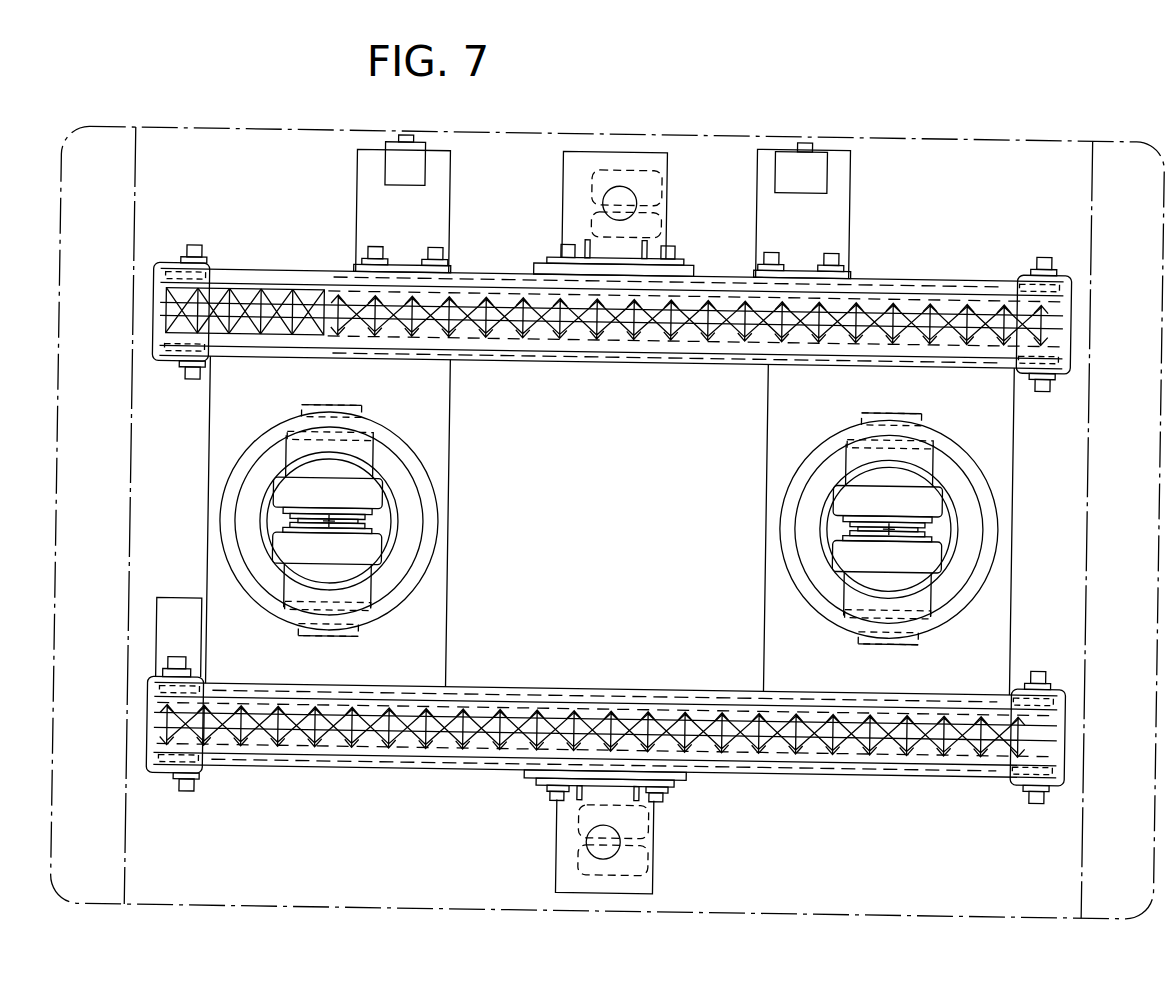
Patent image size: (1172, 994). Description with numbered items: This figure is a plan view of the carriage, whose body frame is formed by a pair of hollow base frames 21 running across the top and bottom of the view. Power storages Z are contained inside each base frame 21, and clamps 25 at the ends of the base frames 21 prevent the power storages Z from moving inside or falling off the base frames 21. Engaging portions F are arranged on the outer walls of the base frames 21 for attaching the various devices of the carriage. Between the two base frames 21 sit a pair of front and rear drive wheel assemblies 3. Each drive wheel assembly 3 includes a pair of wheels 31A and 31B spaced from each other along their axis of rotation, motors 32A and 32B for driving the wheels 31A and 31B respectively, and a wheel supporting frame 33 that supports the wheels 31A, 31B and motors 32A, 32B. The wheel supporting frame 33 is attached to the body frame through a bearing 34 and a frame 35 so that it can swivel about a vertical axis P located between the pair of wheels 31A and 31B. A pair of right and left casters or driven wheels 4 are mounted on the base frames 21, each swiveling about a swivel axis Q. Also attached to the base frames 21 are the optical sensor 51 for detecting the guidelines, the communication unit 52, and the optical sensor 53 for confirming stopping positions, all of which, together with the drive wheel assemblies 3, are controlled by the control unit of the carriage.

The base frame 21 is at (934, 301).
The clamp 25 is at (163, 268).
The drive wheel assembly 3 is at (266, 510).
The driven wheel 4 is at (677, 226).
The wheel 31A is at (372, 553).
The wheel 31B is at (375, 500).
The motor 32A is at (354, 583).
The motor 32B is at (351, 467).
The wheel supporting frame 33 is at (298, 420).
The bearing 34 is at (407, 592).
The frame 35 is at (447, 427).
The optical sensor 51 is at (175, 602).
The communication unit 52 is at (820, 176).
The optical sensor 53 is at (393, 172).
The engaging portion F is at (586, 375).
The vertical axis P is at (330, 530).
The swivel axis Q is at (600, 202).
The power storage Z is at (305, 292).